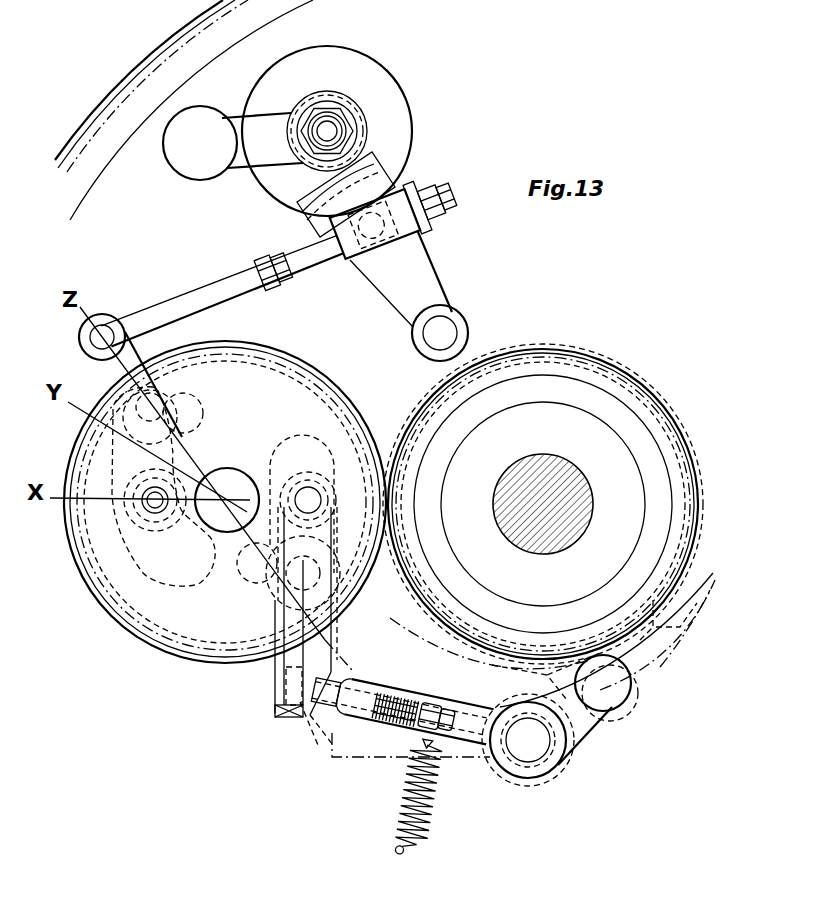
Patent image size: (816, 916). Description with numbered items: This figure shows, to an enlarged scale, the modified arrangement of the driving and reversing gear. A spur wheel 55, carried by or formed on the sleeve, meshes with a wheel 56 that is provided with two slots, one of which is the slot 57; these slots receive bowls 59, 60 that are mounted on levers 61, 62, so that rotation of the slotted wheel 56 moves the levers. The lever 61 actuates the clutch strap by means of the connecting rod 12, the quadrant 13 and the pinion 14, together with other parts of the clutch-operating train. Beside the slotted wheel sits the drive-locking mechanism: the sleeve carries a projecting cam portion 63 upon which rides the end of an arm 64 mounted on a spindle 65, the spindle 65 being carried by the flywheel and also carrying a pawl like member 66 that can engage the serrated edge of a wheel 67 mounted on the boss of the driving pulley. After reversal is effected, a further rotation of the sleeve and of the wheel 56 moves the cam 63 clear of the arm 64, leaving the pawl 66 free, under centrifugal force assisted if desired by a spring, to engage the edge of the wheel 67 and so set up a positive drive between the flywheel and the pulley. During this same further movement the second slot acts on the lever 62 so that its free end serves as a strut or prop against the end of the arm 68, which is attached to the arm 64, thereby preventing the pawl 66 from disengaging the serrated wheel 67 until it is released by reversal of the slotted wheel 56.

The connecting rod 12 is at (227, 279).
The quadrant 13 is at (385, 196).
The pinion 14 is at (377, 118).
The spur wheel 55 is at (613, 362).
The wheel 56 is at (337, 388).
The slot 57 is at (172, 575).
The bowl 59 is at (123, 516).
The bowl 60 is at (313, 468).
The lever 61 is at (98, 364).
The lever 62 is at (313, 643).
The cam portion 63 is at (643, 637).
The arm 64 is at (580, 723).
The spindle 65 is at (533, 742).
The pawl like member 66 is at (634, 707).
The wheel 67 is at (683, 605).
The arm 68 is at (362, 687).